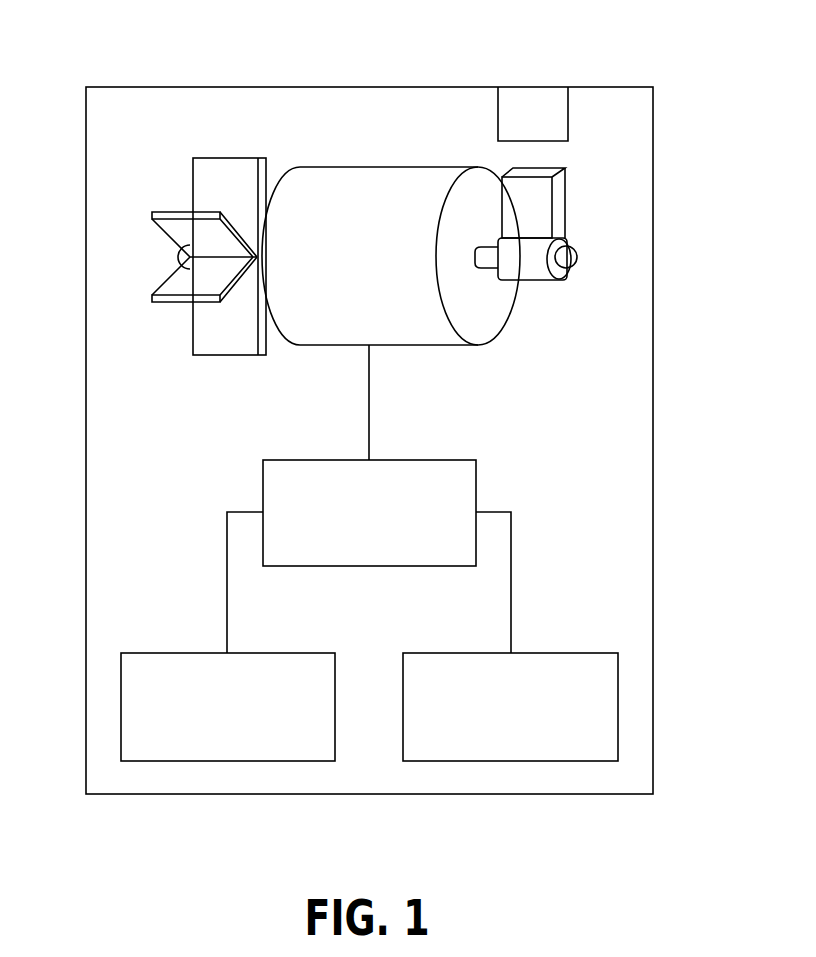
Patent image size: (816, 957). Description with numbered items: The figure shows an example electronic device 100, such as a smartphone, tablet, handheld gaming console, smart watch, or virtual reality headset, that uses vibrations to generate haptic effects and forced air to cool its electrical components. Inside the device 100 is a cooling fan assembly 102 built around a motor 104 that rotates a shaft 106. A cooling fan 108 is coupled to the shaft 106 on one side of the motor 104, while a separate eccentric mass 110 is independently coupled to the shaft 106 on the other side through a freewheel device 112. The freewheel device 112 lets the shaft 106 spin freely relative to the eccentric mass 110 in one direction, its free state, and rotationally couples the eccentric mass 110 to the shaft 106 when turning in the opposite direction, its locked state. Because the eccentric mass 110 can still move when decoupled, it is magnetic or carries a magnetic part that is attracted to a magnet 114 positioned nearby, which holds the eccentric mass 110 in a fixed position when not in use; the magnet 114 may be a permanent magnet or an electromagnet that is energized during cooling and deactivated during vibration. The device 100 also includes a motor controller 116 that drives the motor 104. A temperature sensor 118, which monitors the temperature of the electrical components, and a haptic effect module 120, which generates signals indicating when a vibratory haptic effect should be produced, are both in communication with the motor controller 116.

The electronic device 100 is at (137, 47).
The cooling fan assembly 102 is at (152, 154).
The motor 104 is at (337, 167).
The shaft 106 is at (167, 257).
The cooling fan 108 is at (218, 158).
The eccentric mass 110 is at (567, 194).
The freewheel device 112 is at (567, 232).
The magnet 114 is at (568, 100).
The motor controller 116 is at (430, 460).
The temperature sensor 118 is at (253, 653).
The haptic effect module 120 is at (558, 653).